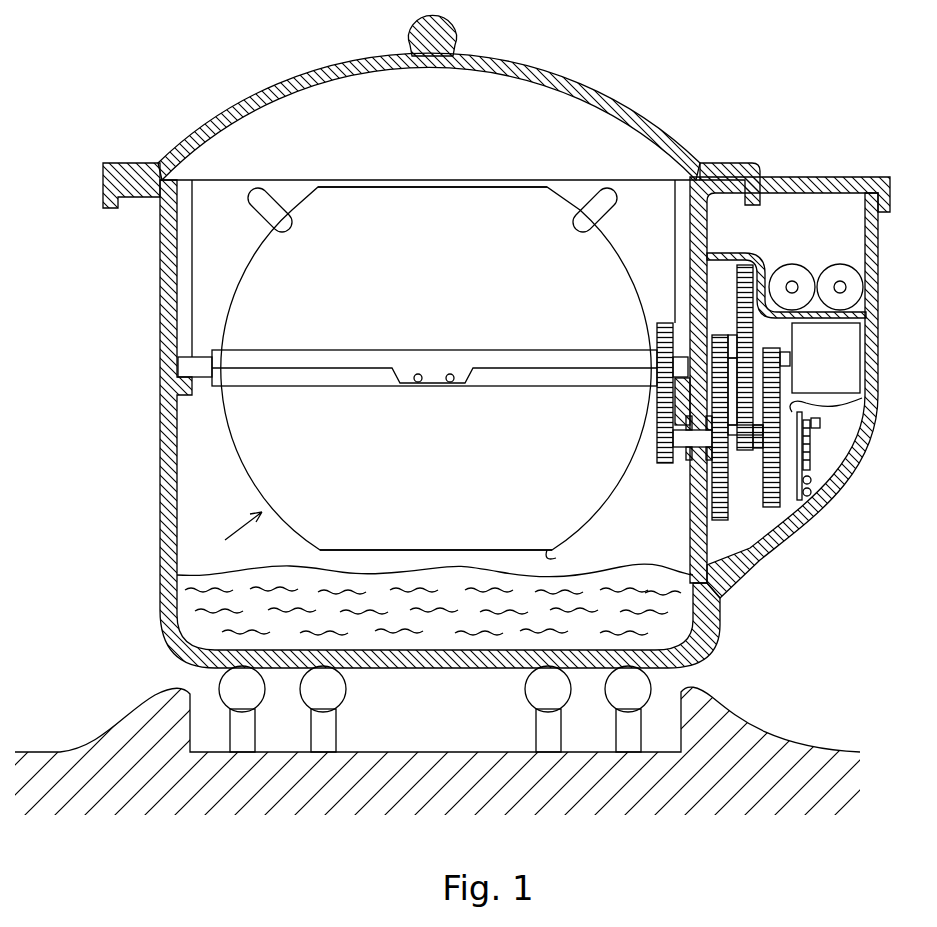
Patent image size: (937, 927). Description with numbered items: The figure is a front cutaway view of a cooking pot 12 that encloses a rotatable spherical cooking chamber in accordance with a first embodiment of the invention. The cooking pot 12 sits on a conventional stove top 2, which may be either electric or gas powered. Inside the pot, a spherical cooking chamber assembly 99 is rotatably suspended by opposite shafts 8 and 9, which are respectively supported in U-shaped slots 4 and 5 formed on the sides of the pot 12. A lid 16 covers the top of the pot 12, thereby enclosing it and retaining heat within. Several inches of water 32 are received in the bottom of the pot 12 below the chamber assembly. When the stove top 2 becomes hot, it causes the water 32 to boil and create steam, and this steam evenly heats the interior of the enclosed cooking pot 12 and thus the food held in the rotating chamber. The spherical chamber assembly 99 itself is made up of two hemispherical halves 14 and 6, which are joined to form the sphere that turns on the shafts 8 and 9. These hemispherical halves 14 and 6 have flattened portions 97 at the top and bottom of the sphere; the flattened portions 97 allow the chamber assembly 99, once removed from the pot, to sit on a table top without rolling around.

The stove top 2 is at (427, 752).
The U-shaped slot 4 is at (183, 288).
The U-shaped slot 5 is at (680, 248).
The hemispherical half 6 is at (253, 483).
The shaft 8 is at (198, 375).
The shaft 9 is at (683, 358).
The cooking pot 12 is at (162, 467).
The hemispherical half 14 is at (258, 252).
The lid 16 is at (262, 91).
The water 32 is at (663, 625).
The flattened portions 97 is at (456, 187).
The spherical cooking chamber assembly 99 is at (229, 536).